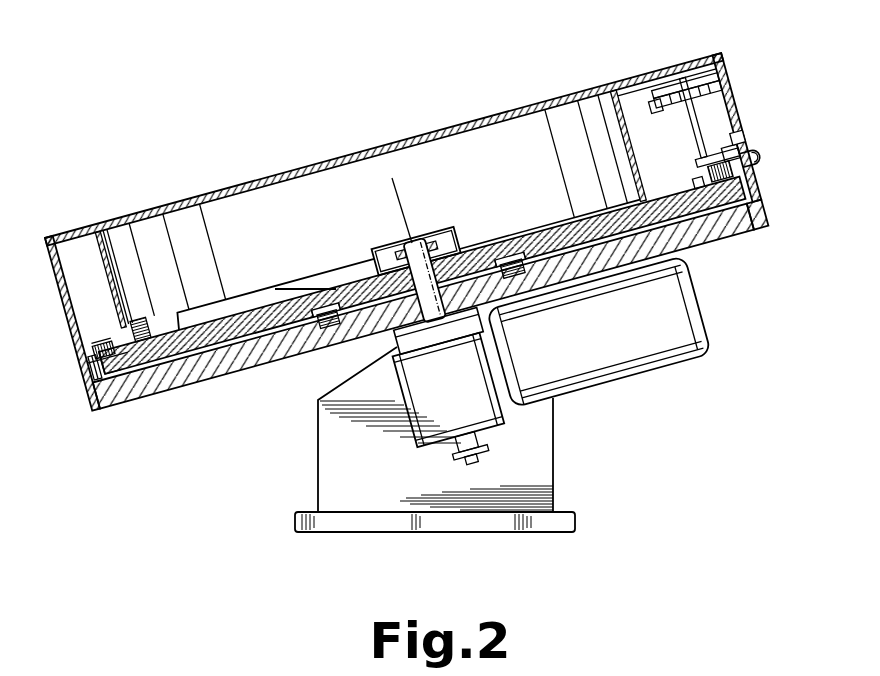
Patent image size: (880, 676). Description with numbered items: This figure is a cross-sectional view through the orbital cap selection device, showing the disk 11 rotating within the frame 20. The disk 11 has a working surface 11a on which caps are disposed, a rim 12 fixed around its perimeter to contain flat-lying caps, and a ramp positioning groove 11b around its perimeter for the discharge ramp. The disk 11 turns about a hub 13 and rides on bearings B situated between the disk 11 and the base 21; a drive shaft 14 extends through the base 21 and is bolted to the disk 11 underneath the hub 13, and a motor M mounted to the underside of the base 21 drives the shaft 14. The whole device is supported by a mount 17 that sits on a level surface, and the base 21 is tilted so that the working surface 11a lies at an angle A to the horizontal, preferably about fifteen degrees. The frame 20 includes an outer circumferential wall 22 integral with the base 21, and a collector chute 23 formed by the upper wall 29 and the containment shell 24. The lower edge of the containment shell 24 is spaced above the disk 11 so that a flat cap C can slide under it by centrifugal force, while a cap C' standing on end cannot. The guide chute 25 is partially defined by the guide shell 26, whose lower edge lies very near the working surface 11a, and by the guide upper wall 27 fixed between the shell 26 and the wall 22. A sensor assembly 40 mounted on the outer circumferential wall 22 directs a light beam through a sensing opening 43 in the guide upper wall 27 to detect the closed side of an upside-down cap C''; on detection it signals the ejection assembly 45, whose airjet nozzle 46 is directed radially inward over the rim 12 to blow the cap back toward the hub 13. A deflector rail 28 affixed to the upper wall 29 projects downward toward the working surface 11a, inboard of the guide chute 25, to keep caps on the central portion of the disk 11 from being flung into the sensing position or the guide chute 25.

The disk 11 is at (165, 358).
The working surface 11a is at (241, 316).
The ramp positioning groove 11b is at (120, 372).
The rim 12 is at (82, 366).
The hub 13 is at (379, 245).
The drive shaft 14 is at (419, 246).
The mount 17 is at (330, 476).
The frame 20 is at (55, 234).
The base 21 is at (737, 228).
The outer circumferential wall 22 is at (54, 283).
The collector chute 23 is at (120, 280).
The containment shell 24 is at (108, 253).
The guide chute 25 is at (714, 147).
The guide shell 26 is at (698, 184).
The guide upper wall 27 is at (744, 134).
The deflector rail 28 is at (619, 150).
The upper wall 29 is at (93, 240).
The sensor assembly 40 is at (732, 68).
The sensing opening 43 is at (712, 156).
The ejection assembly 45 is at (771, 147).
The airjet nozzle 46 is at (760, 166).
The angle A is at (283, 288).
The bearings B is at (348, 338).
The cap C is at (100, 329).
The cap C' is at (145, 313).
The cap C'' is at (698, 174).
The motor M is at (513, 414).